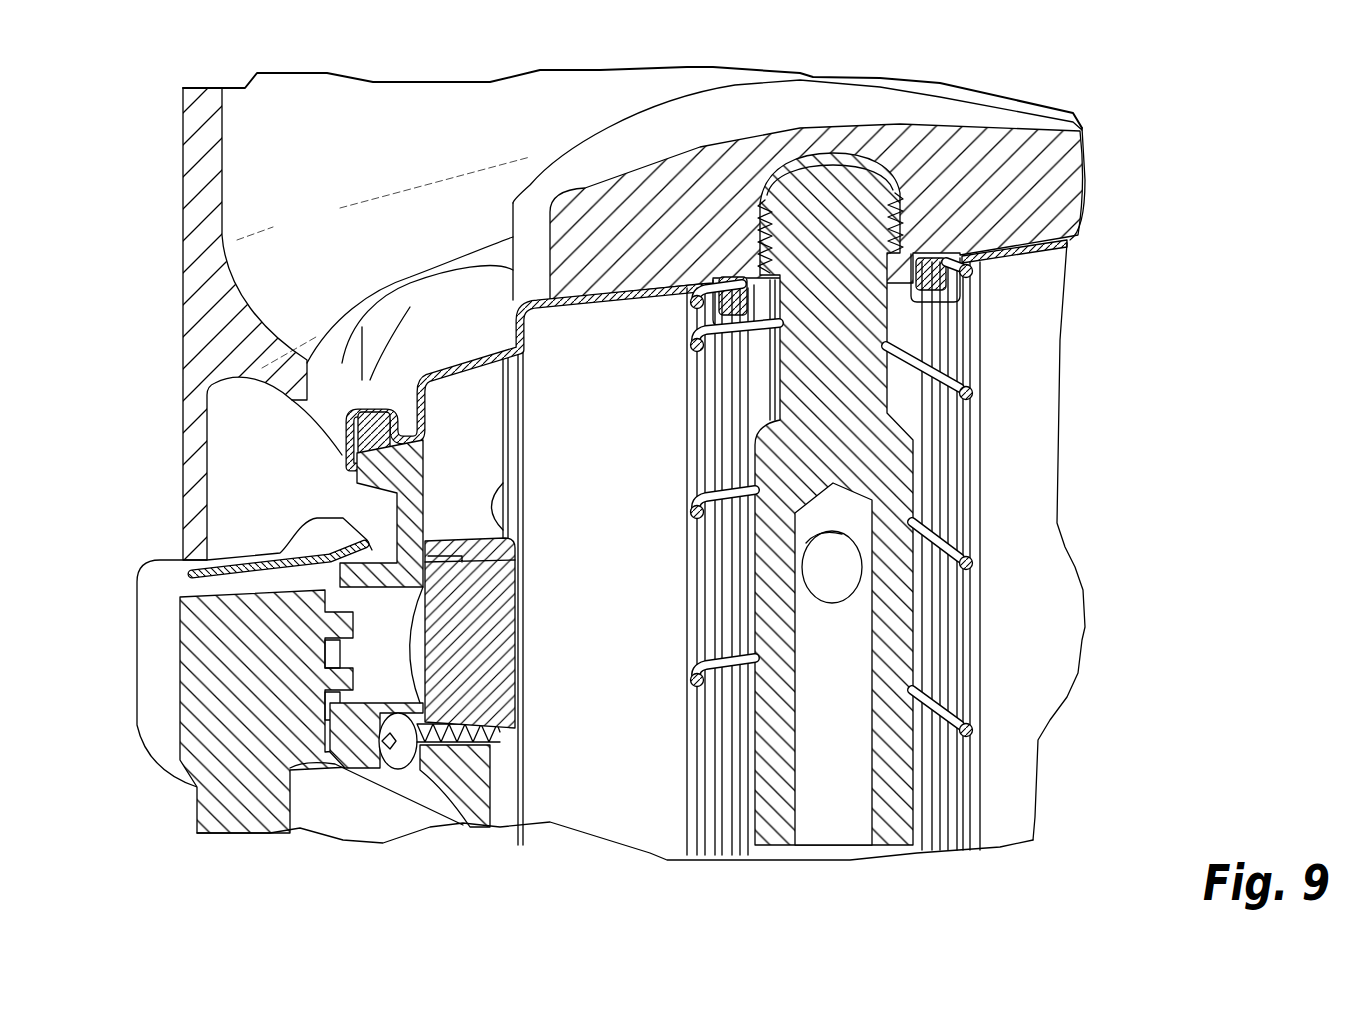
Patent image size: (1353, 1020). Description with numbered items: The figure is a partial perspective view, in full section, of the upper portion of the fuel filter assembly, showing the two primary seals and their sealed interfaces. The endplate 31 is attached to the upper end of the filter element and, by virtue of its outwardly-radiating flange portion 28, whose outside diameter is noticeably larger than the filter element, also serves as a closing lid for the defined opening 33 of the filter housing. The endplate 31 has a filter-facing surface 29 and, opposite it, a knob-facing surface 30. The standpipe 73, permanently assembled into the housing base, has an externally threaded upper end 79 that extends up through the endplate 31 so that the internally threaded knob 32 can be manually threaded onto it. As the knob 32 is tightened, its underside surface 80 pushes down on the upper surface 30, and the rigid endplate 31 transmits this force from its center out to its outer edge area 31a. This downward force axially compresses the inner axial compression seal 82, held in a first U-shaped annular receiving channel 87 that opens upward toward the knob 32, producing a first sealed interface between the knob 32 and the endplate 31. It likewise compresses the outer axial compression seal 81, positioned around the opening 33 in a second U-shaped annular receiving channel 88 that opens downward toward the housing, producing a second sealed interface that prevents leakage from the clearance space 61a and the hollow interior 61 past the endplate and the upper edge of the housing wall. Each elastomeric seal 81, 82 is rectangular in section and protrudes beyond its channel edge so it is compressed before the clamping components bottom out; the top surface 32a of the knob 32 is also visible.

The outwardly-radiating flange portion 28 is at (440, 313).
The filter-facing surface 29 is at (600, 315).
The knob-facing surface 30 is at (503, 273).
The endplate 31 is at (1030, 246).
The outer edge area 31a is at (320, 373).
The knob 32 is at (1035, 162).
The cap top surface 32a is at (877, 103).
The defined opening 33 is at (360, 472).
The hollow interior 61 is at (478, 488).
The clearance space 61a is at (494, 406).
The standpipe 73 is at (893, 493).
The upper end of the standpipe 79 is at (932, 224).
The underside surface 80 is at (993, 254).
The outer axial compression seal 81 is at (352, 420).
The inner axial compression seal 82 is at (743, 273).
The first U-shaped annular receiving channel 87 is at (735, 340).
The second U-shaped annular receiving channel 88 is at (367, 367).